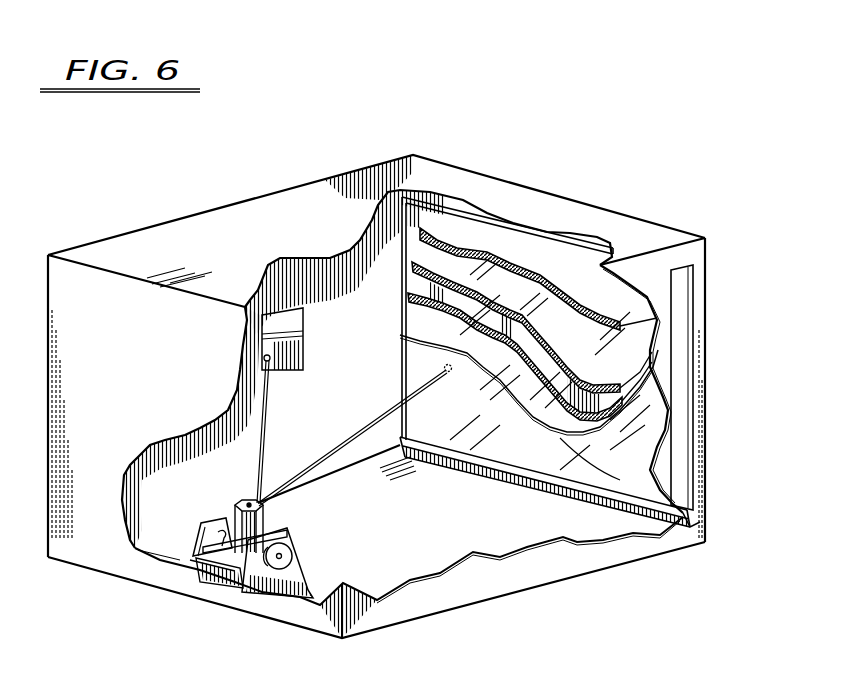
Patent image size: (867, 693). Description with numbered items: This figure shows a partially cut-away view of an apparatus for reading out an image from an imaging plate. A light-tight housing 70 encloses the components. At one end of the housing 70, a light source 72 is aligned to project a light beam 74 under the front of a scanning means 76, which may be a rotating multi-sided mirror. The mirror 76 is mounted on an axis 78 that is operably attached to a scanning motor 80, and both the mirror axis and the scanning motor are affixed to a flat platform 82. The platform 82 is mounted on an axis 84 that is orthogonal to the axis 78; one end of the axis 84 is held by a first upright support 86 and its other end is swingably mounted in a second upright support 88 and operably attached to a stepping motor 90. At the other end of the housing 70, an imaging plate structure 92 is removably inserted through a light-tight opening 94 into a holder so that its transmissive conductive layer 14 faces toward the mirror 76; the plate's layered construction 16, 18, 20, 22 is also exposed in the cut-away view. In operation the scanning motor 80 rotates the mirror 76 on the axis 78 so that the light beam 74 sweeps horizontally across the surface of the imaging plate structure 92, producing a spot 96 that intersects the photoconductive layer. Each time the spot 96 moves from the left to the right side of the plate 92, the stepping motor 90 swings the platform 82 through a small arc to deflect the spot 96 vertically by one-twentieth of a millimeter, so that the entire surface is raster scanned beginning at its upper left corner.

The transmissive conductive layer 14 is at (577, 464).
The bottom corrugated layer 16 is at (432, 327).
The third corrugated layer 18 is at (424, 289).
The second corrugated layer 20 is at (509, 281).
The top corrugated layer 22 is at (452, 236).
The light-tight housing 70 is at (250, 198).
The light source 72 is at (276, 323).
The light beam 74 is at (269, 416).
The scanning means 76 is at (179, 549).
The axis 78 is at (248, 492).
The scanning motor 80 is at (226, 578).
The flat platform 82 is at (190, 566).
The axis 84 is at (227, 509).
The first upright support 86 is at (206, 515).
The second upright support 88 is at (301, 568).
The stepping motor 90 is at (285, 548).
The imaging plate structure 92 is at (684, 282).
The light-tight opening 94 is at (689, 520).
The spot 96 is at (432, 372).